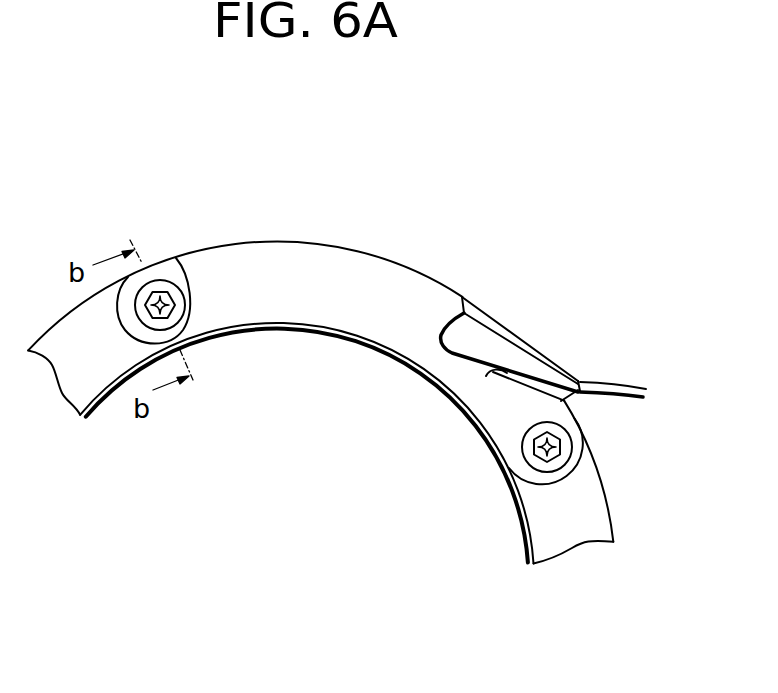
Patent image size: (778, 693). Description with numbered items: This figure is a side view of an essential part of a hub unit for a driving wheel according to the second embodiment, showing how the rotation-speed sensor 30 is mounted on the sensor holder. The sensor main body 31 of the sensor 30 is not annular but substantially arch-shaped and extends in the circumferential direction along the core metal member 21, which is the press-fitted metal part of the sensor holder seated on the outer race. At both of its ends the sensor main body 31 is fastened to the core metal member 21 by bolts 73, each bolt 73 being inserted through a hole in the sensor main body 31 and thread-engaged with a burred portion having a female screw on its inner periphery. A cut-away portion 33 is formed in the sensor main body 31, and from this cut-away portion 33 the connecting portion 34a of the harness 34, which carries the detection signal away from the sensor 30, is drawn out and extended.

The core metal member 21 is at (598, 499).
The sensor 30 is at (291, 331).
The sensor main body 31 is at (413, 287).
The cut-away portion 33 is at (489, 375).
The harness 34 is at (610, 386).
The connecting portion 34a is at (487, 337).
The bolt 73 is at (172, 282).